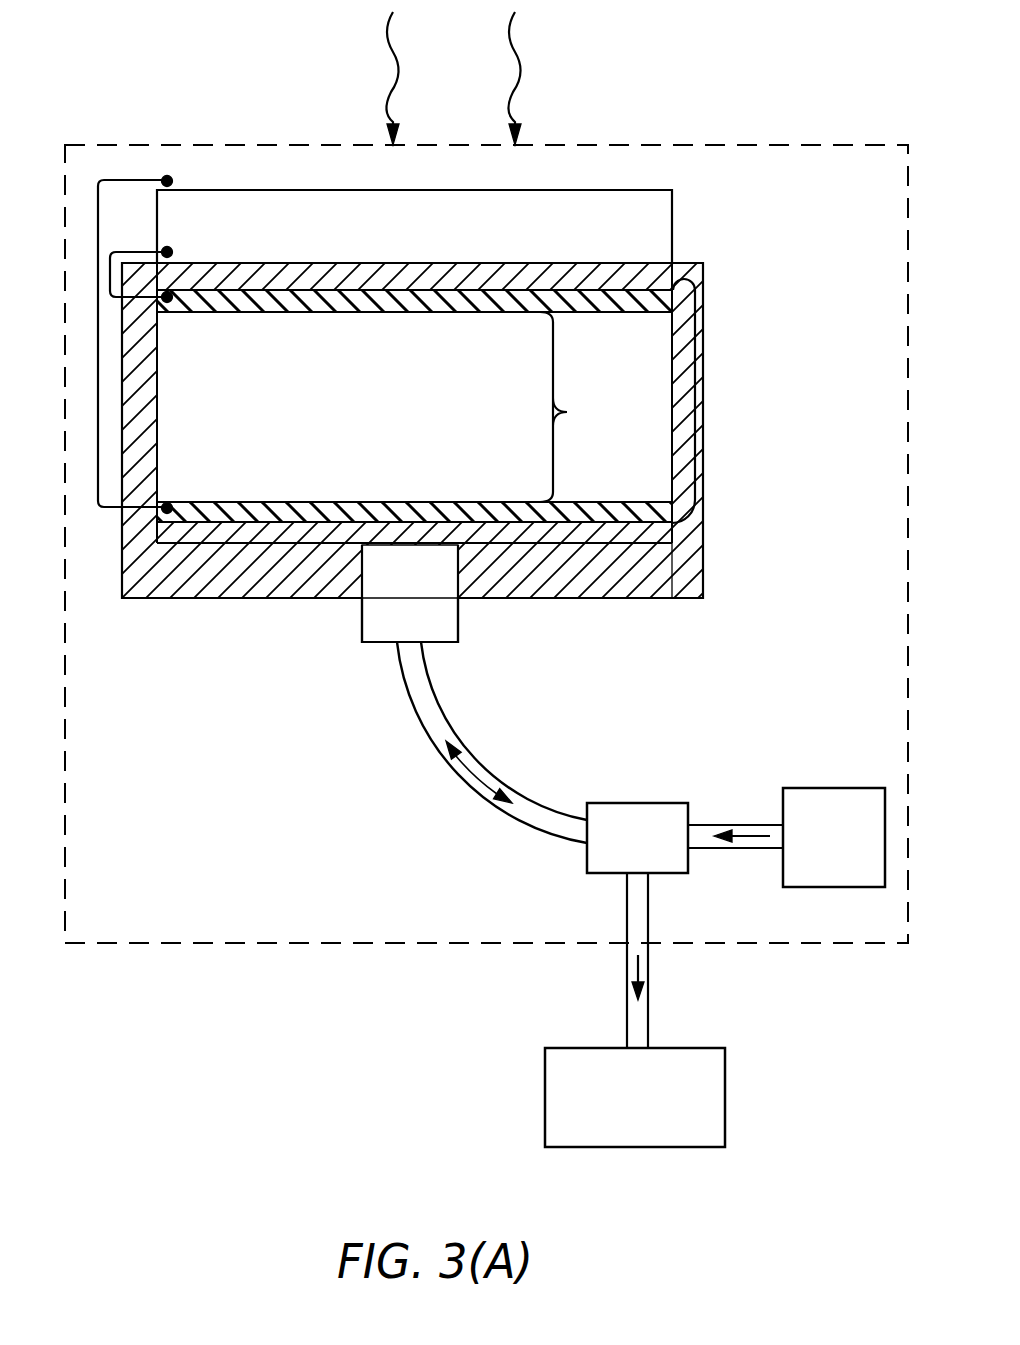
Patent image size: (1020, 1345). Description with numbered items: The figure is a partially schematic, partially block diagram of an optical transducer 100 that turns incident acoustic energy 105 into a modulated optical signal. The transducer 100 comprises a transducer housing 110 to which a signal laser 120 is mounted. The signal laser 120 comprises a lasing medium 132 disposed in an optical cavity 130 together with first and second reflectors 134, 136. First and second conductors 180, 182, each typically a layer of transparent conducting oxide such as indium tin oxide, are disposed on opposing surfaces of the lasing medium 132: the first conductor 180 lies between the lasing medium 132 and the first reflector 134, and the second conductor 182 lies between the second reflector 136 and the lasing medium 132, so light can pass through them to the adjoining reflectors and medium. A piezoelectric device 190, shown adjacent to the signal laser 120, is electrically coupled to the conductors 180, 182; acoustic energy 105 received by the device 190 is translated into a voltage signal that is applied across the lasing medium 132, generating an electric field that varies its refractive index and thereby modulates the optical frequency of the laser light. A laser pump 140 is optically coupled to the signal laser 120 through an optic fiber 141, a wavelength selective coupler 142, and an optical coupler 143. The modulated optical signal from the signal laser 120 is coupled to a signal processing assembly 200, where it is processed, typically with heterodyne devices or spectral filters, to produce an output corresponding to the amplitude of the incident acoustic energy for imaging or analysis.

The optical transducer 100 is at (722, 147).
The incident acoustic waves 105 is at (390, 70).
The transducer housing 110 is at (148, 597).
The signal laser 120 is at (700, 393).
The optical cavity 130 is at (580, 407).
The lasing medium 132 is at (285, 376).
The first reflector 134 is at (632, 532).
The second reflector 136 is at (655, 285).
The laser pump 140 is at (825, 788).
The optic fiber 141 is at (480, 762).
The wavelength selective coupler 142 is at (630, 803).
The optical coupler 143 is at (452, 645).
The first conductor 180 is at (458, 500).
The second conductor 182 is at (455, 312).
The piezoelectric device 190 is at (657, 225).
The signal processing assembly 200 is at (545, 1095).